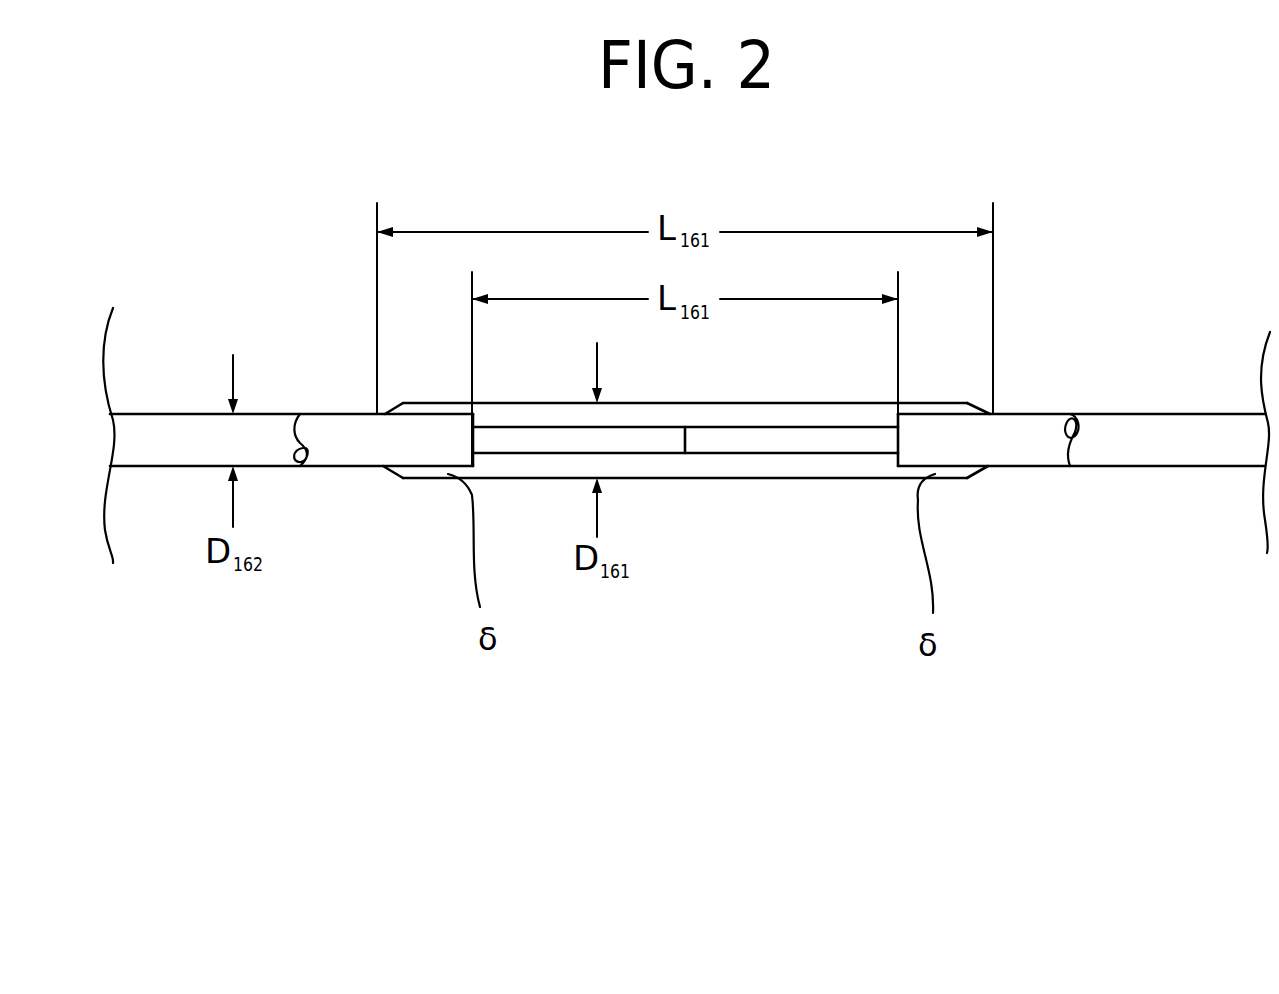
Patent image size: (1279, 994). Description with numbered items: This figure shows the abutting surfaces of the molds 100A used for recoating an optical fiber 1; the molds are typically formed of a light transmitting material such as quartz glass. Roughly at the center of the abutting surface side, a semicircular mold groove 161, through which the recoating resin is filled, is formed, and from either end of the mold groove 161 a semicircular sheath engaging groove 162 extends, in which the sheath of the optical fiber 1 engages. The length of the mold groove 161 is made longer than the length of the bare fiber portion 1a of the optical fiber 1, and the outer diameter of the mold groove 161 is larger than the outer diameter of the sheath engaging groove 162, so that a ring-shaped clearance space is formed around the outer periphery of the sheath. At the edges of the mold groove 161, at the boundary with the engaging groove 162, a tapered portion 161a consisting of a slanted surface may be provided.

The optical fiber 1 is at (322, 405).
The bare fiber portion 1a is at (335, 466).
The mold groove 161 is at (837, 478).
The tapered portion 161a is at (385, 470).
The sheath engaging groove 162 is at (193, 466).
The lower mold 100A is at (687, 464).